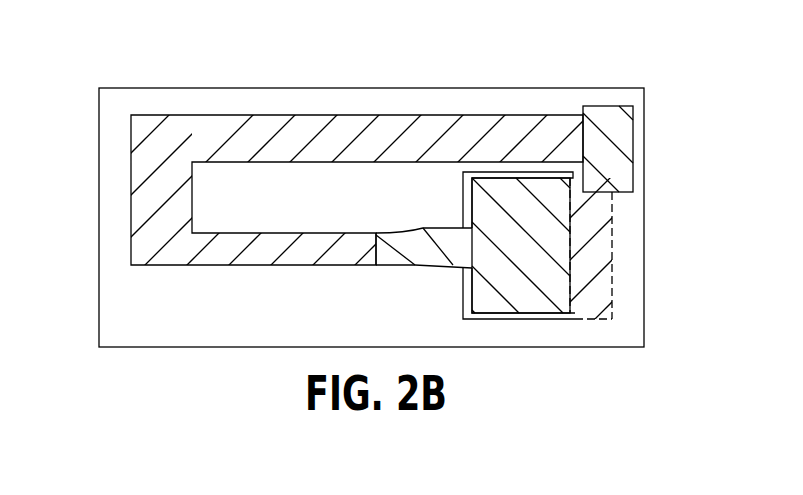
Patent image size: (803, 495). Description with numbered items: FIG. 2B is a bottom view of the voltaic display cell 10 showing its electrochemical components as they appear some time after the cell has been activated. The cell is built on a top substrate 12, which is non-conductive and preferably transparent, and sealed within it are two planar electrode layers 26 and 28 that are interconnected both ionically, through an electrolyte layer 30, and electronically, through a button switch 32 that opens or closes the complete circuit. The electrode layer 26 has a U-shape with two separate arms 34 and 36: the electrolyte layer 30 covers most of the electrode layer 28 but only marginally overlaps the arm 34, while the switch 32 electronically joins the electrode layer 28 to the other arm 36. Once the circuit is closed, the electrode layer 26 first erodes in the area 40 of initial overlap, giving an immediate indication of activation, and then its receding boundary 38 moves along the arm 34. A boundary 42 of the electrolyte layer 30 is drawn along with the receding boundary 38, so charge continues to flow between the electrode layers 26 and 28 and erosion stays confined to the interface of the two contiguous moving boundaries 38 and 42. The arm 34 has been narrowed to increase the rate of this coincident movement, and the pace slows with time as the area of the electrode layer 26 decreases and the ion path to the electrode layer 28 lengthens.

The voltaic display cell 10 is at (599, 61).
The top substrate 12 is at (332, 88).
The electrode layer 26 is at (170, 136).
The electrode layer 28 is at (613, 270).
The electrolyte layer 30 is at (535, 297).
The button switch 32 is at (610, 158).
The arm 34 is at (247, 250).
The arm 36 is at (477, 143).
The boundary 38 is at (389, 256).
The area 40 is at (448, 250).
The boundary 42 is at (375, 250).